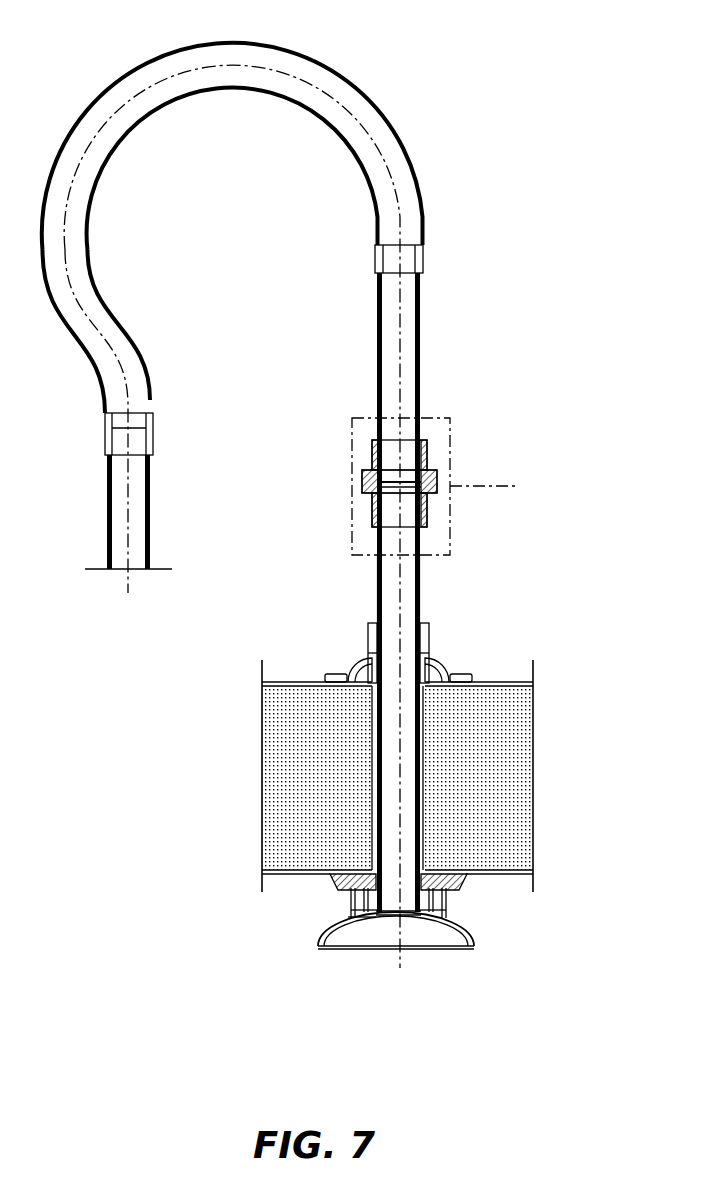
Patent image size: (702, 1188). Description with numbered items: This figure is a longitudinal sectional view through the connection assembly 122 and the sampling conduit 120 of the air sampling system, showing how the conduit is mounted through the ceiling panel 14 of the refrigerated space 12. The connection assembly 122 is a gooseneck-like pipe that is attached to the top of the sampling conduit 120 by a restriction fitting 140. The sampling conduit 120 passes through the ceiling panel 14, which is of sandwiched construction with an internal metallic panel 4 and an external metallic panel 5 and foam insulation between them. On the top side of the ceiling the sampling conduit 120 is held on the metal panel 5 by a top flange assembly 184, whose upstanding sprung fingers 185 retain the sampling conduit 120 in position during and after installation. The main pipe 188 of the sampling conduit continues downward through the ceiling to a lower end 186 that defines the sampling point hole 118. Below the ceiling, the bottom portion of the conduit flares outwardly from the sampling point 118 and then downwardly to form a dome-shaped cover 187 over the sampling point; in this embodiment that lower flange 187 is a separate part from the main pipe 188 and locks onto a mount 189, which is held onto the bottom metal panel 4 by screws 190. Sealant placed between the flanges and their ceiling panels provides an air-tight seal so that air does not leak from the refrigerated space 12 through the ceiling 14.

The connection assembly 122 is at (422, 153).
The restriction fitting 140 is at (446, 461).
The main pipe 188 is at (421, 573).
The sampling conduit 120 is at (436, 594).
The sprung fingers 185 is at (429, 624).
The top flange assembly 184 is at (447, 656).
The external metallic panel 5 is at (512, 682).
The ceiling panel 14 is at (539, 777).
The internal metallic panel 4 is at (512, 874).
The screws 190 is at (352, 897).
The mount 189 is at (357, 917).
The dome-shaped cover 187 is at (470, 936).
The sampling point hole 118 is at (393, 917).
The lower end 186 is at (416, 916).
The refrigerated space 12 is at (530, 992).